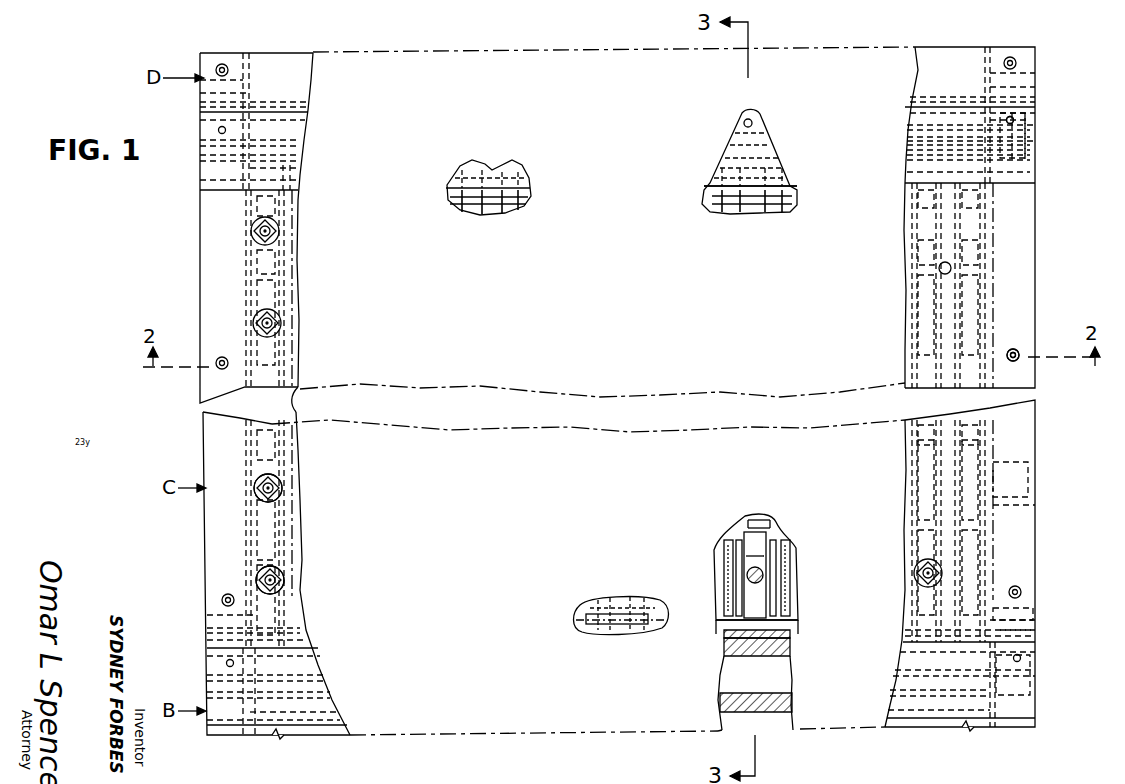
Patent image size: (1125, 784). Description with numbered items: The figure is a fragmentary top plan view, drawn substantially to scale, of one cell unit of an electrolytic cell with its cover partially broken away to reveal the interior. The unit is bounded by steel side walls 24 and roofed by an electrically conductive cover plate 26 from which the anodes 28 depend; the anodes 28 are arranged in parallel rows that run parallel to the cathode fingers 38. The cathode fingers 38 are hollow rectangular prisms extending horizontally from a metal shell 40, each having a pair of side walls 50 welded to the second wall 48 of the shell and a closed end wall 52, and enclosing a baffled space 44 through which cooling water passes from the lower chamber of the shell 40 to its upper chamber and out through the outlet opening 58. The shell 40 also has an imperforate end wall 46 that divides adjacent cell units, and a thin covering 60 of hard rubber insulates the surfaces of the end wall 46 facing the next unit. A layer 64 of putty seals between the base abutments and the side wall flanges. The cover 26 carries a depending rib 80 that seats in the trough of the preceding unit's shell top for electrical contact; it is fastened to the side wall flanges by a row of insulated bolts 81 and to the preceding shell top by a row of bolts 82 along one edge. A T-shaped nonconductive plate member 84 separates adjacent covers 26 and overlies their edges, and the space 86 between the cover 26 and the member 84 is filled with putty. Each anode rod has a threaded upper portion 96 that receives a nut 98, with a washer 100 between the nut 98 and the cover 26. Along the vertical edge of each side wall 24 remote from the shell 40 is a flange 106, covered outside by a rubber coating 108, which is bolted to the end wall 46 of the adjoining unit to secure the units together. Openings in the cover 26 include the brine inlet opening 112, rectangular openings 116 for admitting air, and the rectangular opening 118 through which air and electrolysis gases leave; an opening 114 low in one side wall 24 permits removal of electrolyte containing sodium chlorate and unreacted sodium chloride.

The side wall 24 is at (992, 512).
The cover plate 26 is at (275, 396).
The anode 28 is at (755, 575).
The cathode finger 38 is at (942, 367).
The shell 40 is at (740, 690).
The space 44 is at (776, 540).
The imperforate wall 46 is at (776, 652).
The second wall 48 is at (776, 748).
The side wall of cathode finger 50 is at (784, 598).
The end wall of cathode finger 52 is at (788, 622).
The outlet opening 58 is at (1025, 690).
The covering of hard rubber 60 is at (724, 630).
The layer of sealing material 64 is at (1035, 628).
The rib 80 is at (1038, 125).
The bolt 81 is at (1020, 350).
The bolt 82 is at (750, 120).
The nonconductive plate member 84 is at (1030, 157).
The space 86 is at (1033, 143).
The upper portion of rod 96 is at (262, 580).
The nut 98 is at (231, 534).
The washer 100 is at (262, 493).
The flange 106 is at (1030, 614).
The coating of rubber 108 is at (1035, 624).
The opening 112 is at (950, 265).
The opening 114 is at (1030, 475).
The rectangular opening 116 is at (797, 190).
The rectangular opening 118 is at (582, 632).